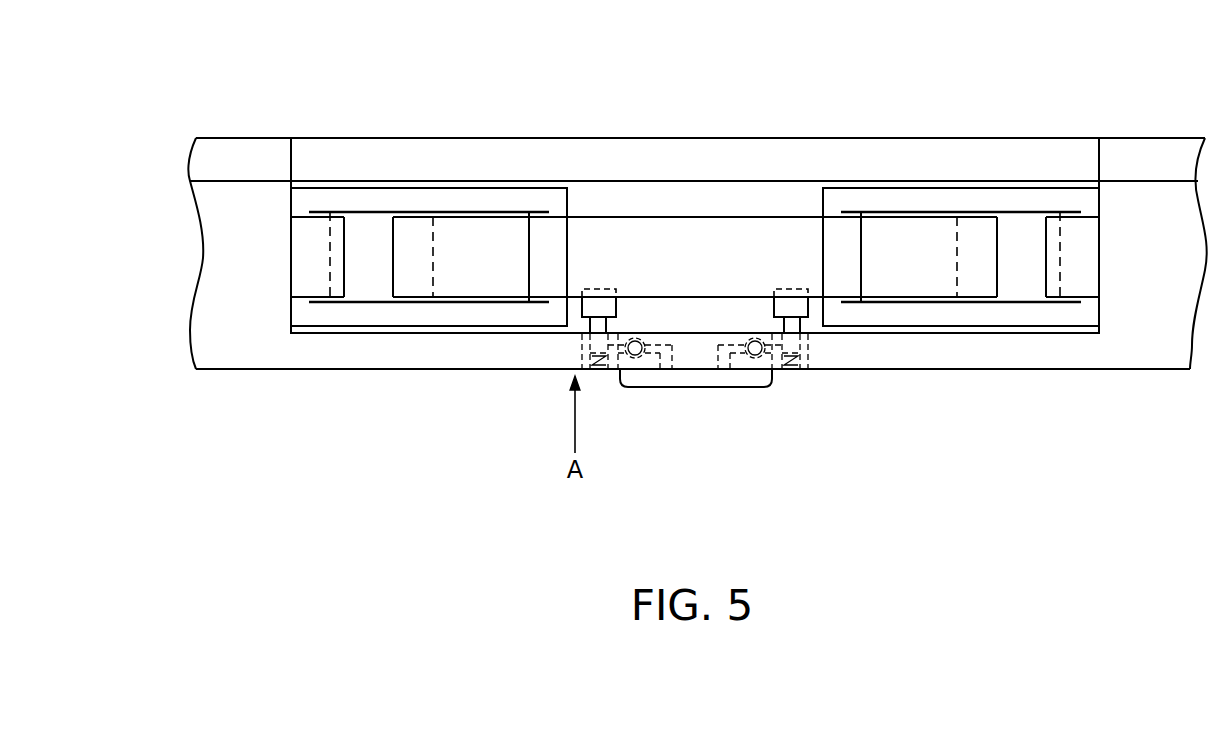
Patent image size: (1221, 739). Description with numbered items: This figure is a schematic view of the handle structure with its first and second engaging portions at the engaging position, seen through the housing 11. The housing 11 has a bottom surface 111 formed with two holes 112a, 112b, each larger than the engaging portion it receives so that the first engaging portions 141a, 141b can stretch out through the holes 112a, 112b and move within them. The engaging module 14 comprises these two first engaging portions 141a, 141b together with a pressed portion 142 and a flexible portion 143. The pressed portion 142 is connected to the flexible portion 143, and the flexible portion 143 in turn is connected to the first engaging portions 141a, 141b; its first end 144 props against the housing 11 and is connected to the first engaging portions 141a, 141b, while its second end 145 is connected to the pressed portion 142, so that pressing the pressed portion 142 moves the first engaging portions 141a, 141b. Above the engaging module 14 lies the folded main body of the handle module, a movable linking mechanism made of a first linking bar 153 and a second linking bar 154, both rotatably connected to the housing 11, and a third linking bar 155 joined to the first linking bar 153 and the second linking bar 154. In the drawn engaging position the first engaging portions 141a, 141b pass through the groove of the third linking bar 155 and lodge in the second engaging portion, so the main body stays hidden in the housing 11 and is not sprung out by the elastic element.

The housing 11 is at (1147, 370).
The bottom surface 111 is at (1082, 333).
The hole 112a is at (636, 332).
The hole 112b is at (755, 332).
The engaging module 14 is at (638, 457).
The first engaging portion 141a is at (600, 310).
The first engaging portion 141b is at (800, 306).
The pressed portion 142 is at (737, 388).
The flexible portion 143 is at (773, 365).
The first end 144 is at (815, 362).
The second end 145 is at (720, 348).
The first linking bar 153 is at (408, 315).
The second linking bar 154 is at (1023, 315).
The third linking bar 155 is at (688, 235).